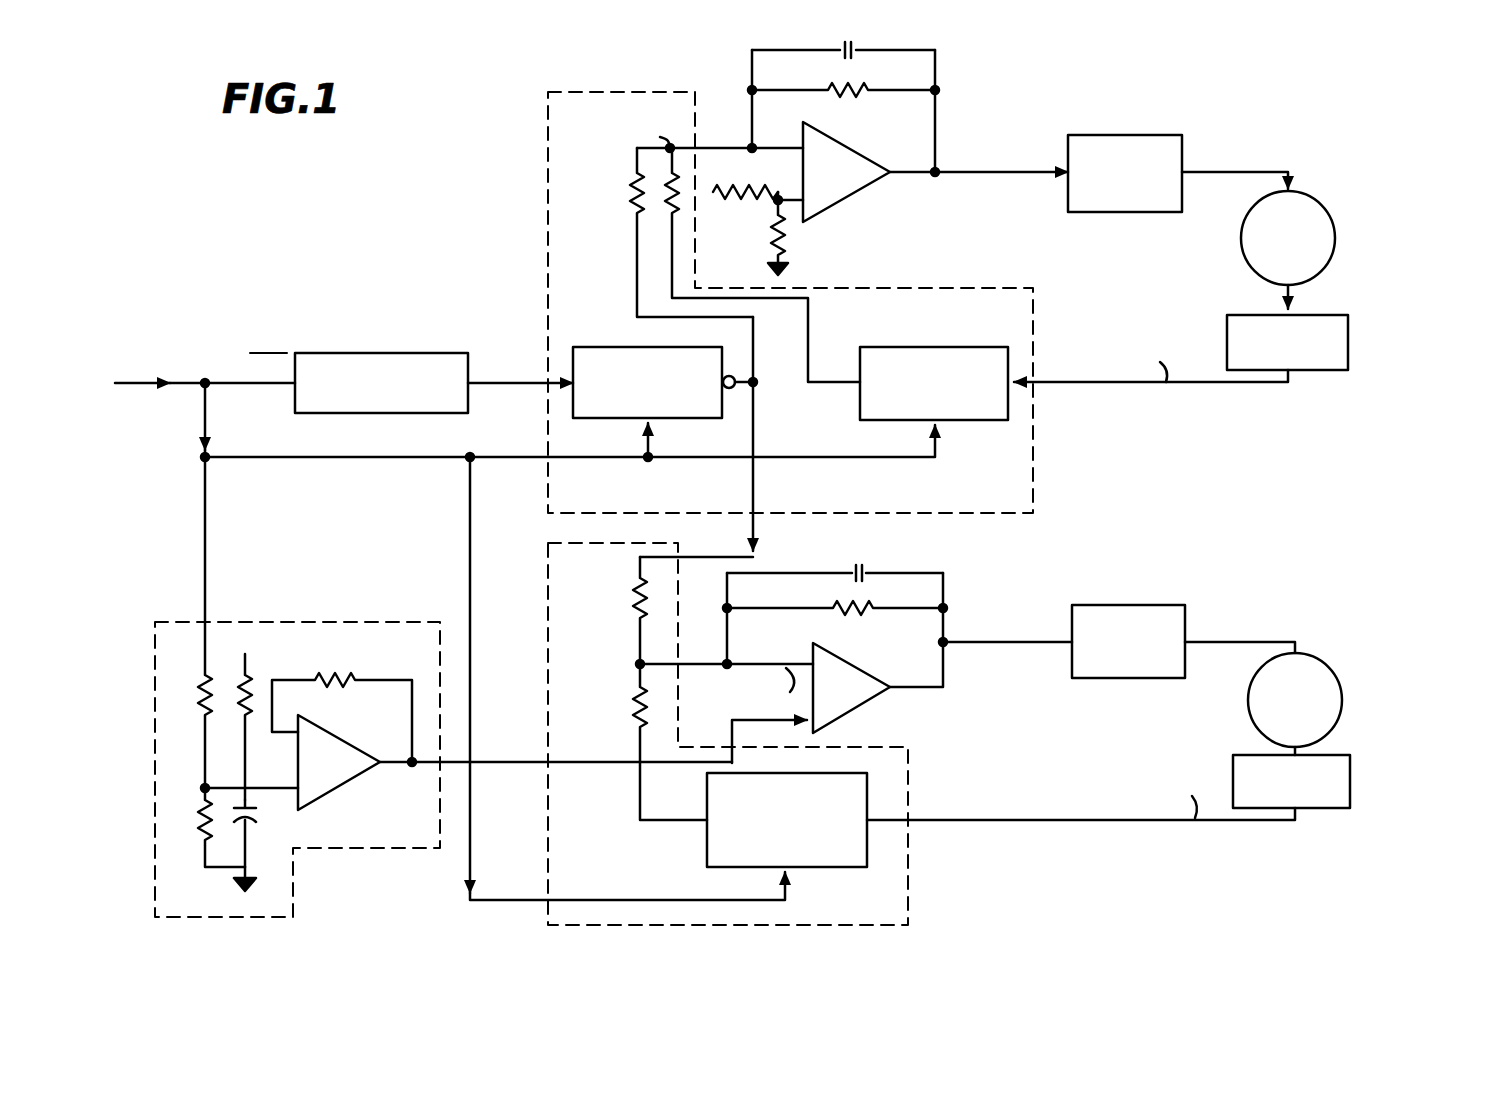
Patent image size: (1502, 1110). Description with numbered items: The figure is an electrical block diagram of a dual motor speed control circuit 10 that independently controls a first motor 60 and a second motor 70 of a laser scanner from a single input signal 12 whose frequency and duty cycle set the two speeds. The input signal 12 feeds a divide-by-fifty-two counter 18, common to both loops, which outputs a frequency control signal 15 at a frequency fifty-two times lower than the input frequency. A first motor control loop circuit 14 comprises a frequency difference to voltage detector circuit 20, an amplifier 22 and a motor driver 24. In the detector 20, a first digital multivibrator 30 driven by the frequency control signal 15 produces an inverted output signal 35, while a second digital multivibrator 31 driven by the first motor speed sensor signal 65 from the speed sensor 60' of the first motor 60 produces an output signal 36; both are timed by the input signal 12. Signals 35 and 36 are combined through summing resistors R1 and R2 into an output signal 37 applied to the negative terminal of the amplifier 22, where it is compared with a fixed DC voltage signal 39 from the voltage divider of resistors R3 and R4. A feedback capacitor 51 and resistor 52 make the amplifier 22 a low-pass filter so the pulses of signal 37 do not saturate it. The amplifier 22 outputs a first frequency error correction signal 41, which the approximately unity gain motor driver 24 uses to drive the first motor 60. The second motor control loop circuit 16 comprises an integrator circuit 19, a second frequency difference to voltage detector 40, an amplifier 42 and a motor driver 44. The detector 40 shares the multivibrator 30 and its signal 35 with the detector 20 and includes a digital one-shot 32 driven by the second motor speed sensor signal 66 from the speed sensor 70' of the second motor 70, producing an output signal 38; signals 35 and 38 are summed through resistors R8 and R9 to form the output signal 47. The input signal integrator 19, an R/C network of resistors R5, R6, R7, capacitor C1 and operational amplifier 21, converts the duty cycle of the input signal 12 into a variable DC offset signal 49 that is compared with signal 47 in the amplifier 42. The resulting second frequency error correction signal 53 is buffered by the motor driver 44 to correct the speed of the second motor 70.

The dual motor speed control circuit 10 is at (447, 265).
The input signal 12 is at (130, 386).
The first motor control loop circuit 14 is at (968, 118).
The frequency control signal 15 is at (525, 387).
The second motor control loop circuit 16 is at (1063, 580).
The divide-by-N counter 18 is at (413, 352).
The input signal integrator 19 is at (440, 622).
The frequency difference to voltage detector circuit 20 is at (1022, 430).
The operational amplifier 21 is at (340, 790).
The amplifier/filter 22 is at (870, 195).
The motor driver 24 is at (1175, 126).
The first digital multivibrator 30 is at (606, 420).
The second digital multivibrator 31 is at (860, 421).
The digital multivibrator 32 is at (812, 868).
The inverted output signal 35 is at (757, 341).
The output signal 36 is at (808, 323).
The output signal 37 is at (740, 147).
The output signal 38 is at (680, 826).
The DC voltage signal 39 is at (803, 206).
The frequency difference to voltage detector 40 is at (895, 863).
The first frequency error correction signal 41 is at (1000, 173).
The amplifier/filter 42 is at (873, 700).
The motor driver 44 is at (1170, 607).
The output signal 47 is at (703, 661).
The variable offset voltage signal 49 is at (813, 727).
The feedback capacitor 51 is at (850, 60).
The feedback resistor 52 is at (852, 100).
The second frequency error correction signal 53 is at (1018, 642).
The first motor 60 is at (1278, 228).
The speed sensor 60' is at (1319, 327).
The first motor speed sensor signal 65 is at (1202, 380).
The second motor speed sensor signal 66 is at (1065, 818).
The second motor 70 is at (1283, 692).
The speed sensor 70' is at (1319, 763).
The summing resistor R1 is at (637, 190).
The summing resistor R2 is at (667, 205).
The resistor R3 is at (748, 200).
The resistor R4 is at (770, 242).
The resistor R5 is at (205, 700).
The resistor R6 is at (205, 832).
The resistor R7 is at (252, 712).
The summing resistor R8 is at (633, 597).
The summing resistor R9 is at (640, 706).
The capacitor C1 is at (248, 818).